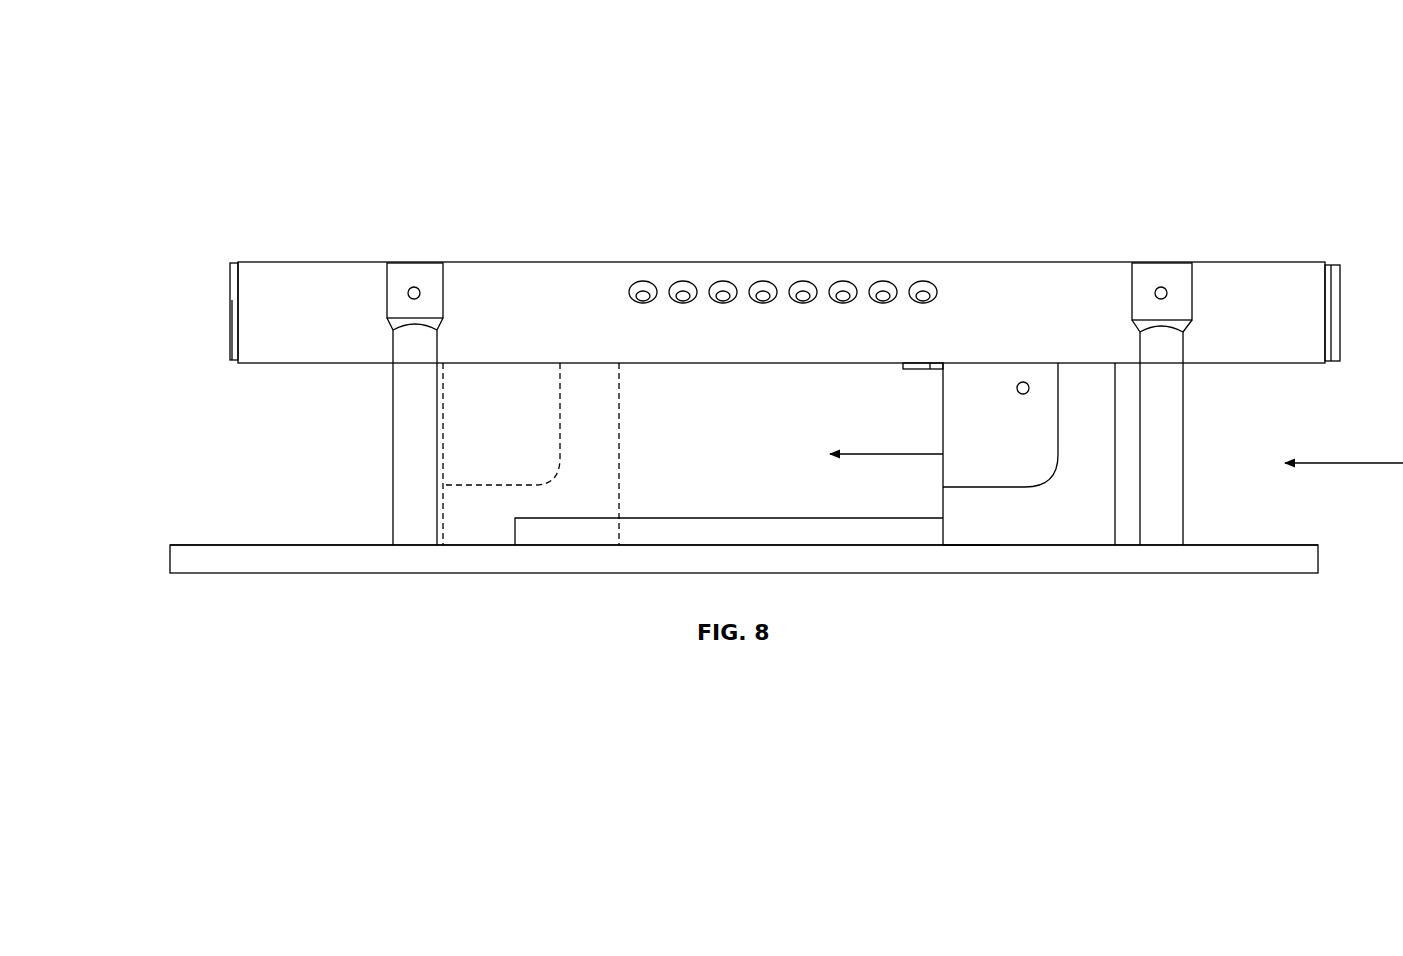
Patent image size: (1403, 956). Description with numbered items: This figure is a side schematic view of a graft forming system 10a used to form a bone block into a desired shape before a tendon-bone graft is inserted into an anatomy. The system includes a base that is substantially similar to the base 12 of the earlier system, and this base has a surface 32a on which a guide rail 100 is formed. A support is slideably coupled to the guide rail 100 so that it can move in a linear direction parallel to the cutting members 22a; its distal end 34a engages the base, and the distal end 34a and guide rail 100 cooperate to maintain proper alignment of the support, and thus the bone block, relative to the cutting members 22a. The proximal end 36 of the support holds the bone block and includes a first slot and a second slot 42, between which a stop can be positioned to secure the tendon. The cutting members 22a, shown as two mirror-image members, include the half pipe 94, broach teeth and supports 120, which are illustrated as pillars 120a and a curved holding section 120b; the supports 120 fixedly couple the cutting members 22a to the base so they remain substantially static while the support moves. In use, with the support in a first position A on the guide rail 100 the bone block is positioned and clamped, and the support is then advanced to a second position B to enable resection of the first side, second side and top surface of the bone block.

The graft forming system 10a is at (230, 121).
The cutting members 22a is at (220, 316).
The half pipe 94 is at (233, 363).
The curved holding section 120b is at (414, 270).
The pillars 120a is at (401, 496).
The supports 120 is at (448, 477).
The second position B is at (620, 469).
The guide rail 100 is at (738, 518).
The second slot 42 is at (1046, 462).
The proximal end 36 is at (1116, 433).
The base 12 is at (1168, 581).
The surface 32a is at (1248, 545).
The distal end 34a is at (990, 547).
The first position A is at (959, 551).